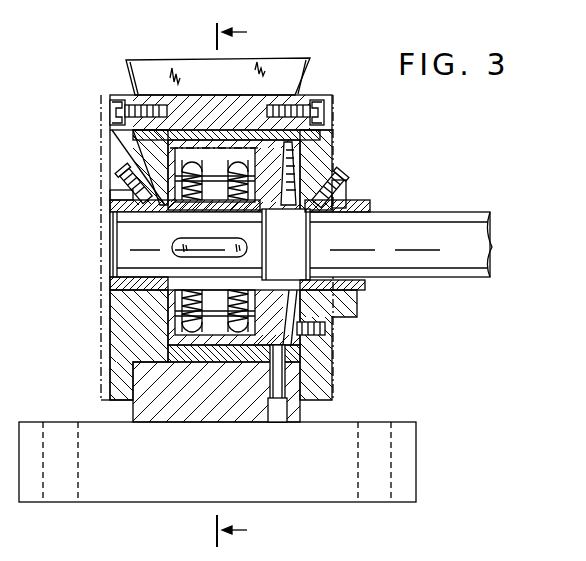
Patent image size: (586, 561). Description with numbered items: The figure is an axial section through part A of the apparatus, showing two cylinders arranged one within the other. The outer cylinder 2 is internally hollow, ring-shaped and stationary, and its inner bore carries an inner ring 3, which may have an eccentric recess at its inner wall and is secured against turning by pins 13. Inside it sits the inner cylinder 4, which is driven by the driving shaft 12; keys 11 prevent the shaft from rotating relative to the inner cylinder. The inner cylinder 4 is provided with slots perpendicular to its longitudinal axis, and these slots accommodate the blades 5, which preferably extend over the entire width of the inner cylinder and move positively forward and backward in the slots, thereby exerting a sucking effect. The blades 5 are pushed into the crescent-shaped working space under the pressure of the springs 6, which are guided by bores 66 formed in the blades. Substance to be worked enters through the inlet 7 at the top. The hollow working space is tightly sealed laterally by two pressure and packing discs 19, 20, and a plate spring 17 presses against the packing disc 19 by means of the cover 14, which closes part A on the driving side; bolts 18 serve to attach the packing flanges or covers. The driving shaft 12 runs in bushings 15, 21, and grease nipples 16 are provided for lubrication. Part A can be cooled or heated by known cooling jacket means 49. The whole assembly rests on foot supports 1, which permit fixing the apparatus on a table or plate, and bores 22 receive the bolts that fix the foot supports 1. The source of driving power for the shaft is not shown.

The foot supports 1 is at (330, 518).
The outer cylinder 2 is at (145, 405).
The inner ring 3 is at (135, 361).
The inner cylinder 4 is at (234, 242).
The blades 5 is at (196, 150).
The springs 6 is at (233, 205).
The inlet 7 is at (155, 70).
The keys 11 is at (174, 248).
The driving shaft 12 is at (447, 222).
The pins 13 is at (277, 380).
The cover 14 is at (356, 303).
The bushing 15 is at (366, 208).
The grease nipples 16 is at (125, 180).
The plate spring 17 is at (296, 172).
The bolts 18 is at (112, 108).
The packing disc 19 is at (322, 142).
The packing disc 20 is at (135, 150).
The bushing 21 is at (110, 209).
The bores 22 is at (59, 430).
The cooling jacket means 49 is at (100, 103).
The bores 66 is at (175, 172).